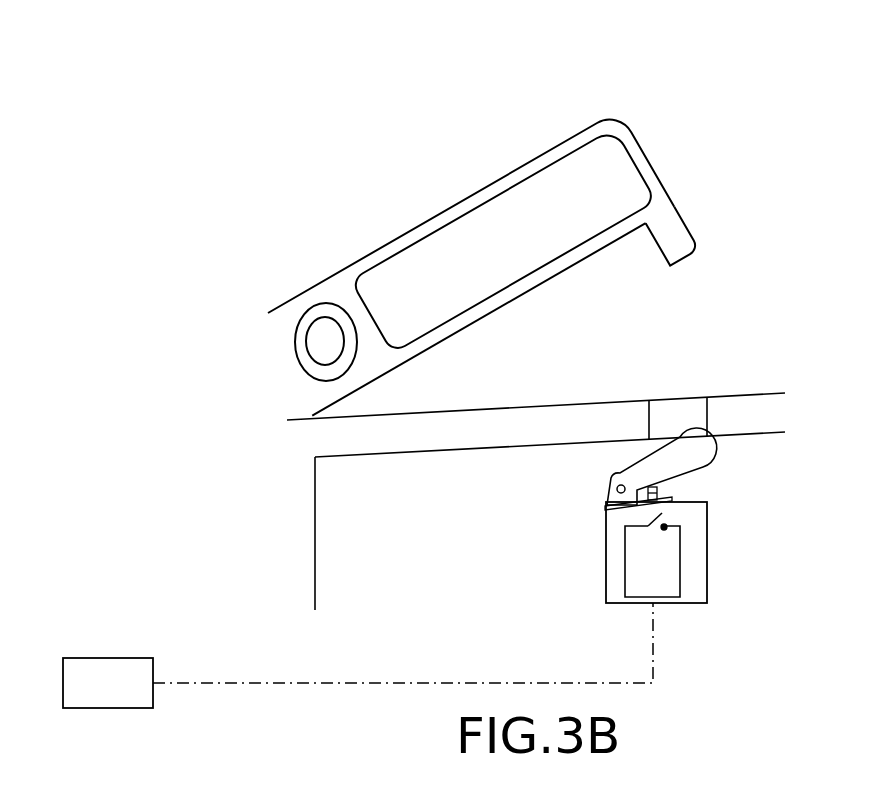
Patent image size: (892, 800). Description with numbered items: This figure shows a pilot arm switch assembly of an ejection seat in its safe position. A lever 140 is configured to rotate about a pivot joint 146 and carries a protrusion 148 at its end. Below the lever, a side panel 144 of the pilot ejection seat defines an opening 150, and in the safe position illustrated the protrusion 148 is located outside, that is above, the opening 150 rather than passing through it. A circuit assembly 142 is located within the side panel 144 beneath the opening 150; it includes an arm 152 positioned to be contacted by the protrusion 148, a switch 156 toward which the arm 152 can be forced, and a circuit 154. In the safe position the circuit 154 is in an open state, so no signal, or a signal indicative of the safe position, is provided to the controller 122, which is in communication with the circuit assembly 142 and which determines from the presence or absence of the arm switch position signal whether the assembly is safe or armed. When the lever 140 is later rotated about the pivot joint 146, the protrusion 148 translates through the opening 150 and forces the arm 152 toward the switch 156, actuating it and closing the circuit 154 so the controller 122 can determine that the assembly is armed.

The lever 140 is at (607, 162).
The protrusion 148 is at (683, 230).
The pivot joint 146 is at (323, 345).
The side panel 144 is at (536, 501).
The opening 150 is at (702, 378).
The arm 152 is at (783, 482).
The switch 156 is at (730, 496).
The circuit assembly 142 is at (605, 528).
The circuit 154 is at (777, 562).
The controller 122 is at (358, 655).